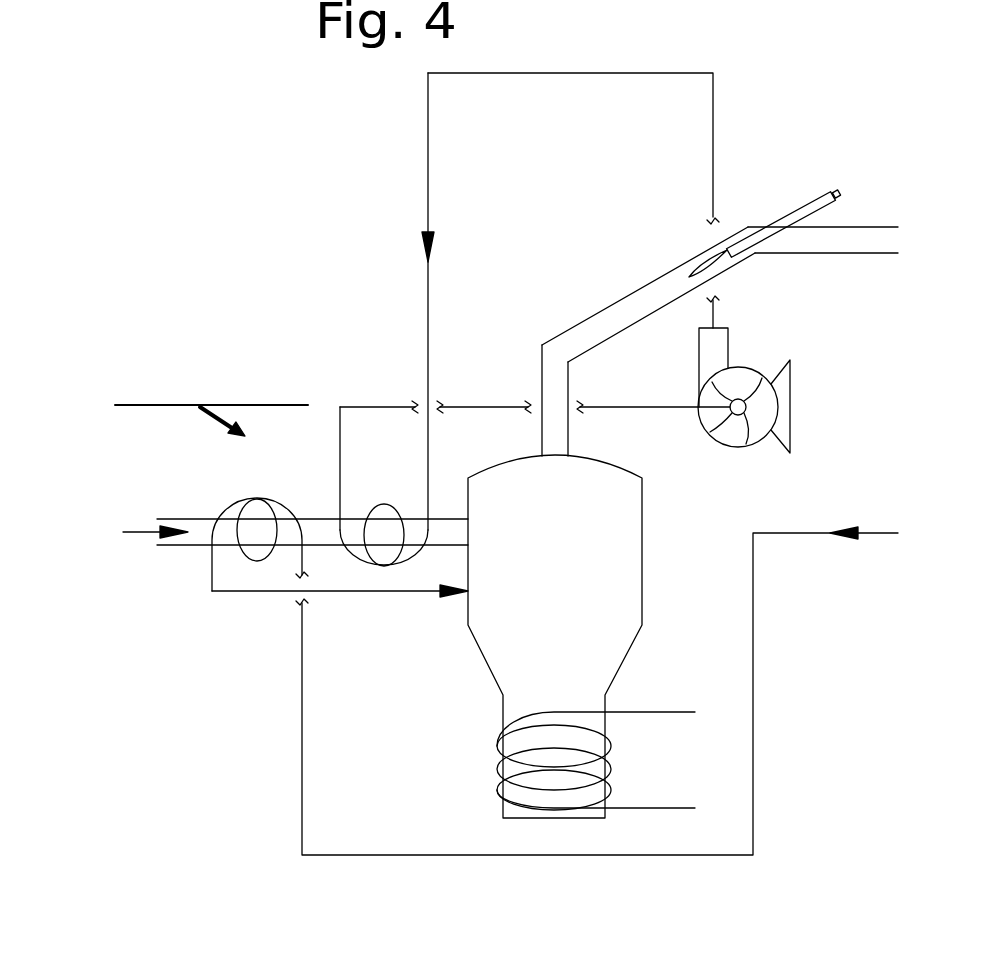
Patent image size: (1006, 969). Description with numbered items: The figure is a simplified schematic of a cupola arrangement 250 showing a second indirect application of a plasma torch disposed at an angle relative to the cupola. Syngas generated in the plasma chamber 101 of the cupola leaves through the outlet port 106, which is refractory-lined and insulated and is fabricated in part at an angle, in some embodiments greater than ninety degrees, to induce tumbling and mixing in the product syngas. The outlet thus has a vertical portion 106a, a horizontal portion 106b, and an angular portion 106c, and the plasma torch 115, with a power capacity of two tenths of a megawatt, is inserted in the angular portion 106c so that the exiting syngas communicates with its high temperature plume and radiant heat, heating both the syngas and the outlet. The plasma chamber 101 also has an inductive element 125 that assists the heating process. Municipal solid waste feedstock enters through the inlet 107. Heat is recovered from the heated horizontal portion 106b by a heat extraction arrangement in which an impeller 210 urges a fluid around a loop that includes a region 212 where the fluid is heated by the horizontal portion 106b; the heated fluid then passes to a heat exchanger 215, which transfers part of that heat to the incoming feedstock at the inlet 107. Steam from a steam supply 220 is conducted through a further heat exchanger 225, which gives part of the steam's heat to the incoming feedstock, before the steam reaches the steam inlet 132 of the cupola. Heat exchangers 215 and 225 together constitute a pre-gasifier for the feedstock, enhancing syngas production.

The plasma chamber 101 is at (612, 636).
The outlet port 106 is at (535, 431).
The vertical portion 106a is at (505, 398).
The horizontal portion 106b is at (858, 210).
The angular portion 106c is at (647, 294).
The inlet 107 is at (256, 570).
The plasma torch 115 is at (693, 224).
The inductive element 125 is at (613, 761).
The steam inlet 132 is at (340, 618).
The impeller 210 is at (745, 404).
The region 212 is at (622, 200).
The heat exchanger 215 is at (387, 319).
The steam supply 220 is at (834, 570).
The heat exchanger 225 is at (211, 490).
The cupola arrangement 250 is at (722, 901).